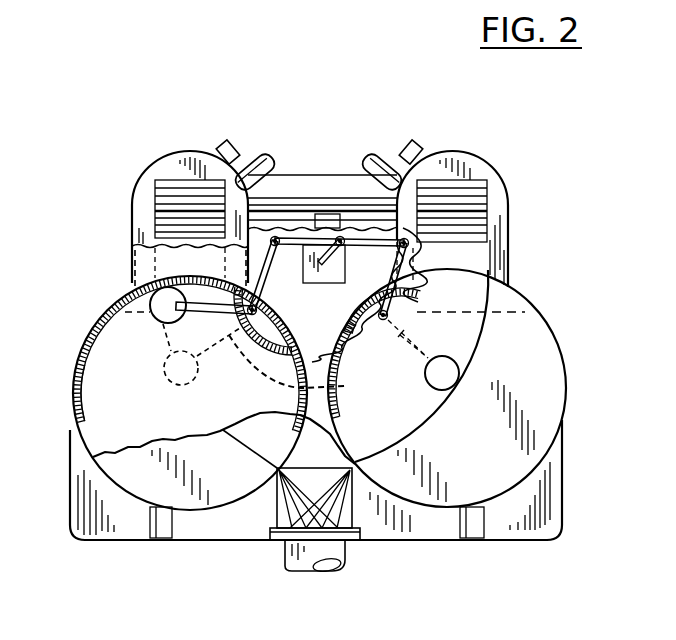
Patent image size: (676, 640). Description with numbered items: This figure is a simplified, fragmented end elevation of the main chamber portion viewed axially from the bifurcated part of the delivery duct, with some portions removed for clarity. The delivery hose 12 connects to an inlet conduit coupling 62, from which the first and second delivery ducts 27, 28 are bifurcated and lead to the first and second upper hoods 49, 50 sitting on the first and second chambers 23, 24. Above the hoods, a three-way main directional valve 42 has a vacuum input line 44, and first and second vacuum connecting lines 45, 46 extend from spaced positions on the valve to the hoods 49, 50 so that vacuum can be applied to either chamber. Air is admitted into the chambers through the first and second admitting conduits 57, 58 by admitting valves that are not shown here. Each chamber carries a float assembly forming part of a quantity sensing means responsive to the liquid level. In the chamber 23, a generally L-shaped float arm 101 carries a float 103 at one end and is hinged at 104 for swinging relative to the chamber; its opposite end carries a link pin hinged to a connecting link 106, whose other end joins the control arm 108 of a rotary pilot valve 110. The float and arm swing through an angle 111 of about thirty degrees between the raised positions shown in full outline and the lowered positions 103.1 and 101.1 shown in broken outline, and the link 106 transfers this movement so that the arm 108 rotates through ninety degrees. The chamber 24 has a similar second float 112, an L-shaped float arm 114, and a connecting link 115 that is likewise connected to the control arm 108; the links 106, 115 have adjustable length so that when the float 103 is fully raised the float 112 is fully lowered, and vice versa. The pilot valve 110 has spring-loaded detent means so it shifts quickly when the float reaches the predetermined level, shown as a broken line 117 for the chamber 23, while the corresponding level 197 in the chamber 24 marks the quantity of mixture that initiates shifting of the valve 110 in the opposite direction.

The delivery hose 12 is at (347, 555).
The first chamber 23 is at (78, 352).
The second chamber 24 is at (553, 365).
The first delivery duct 27 is at (257, 441).
The second delivery duct 28 is at (427, 423).
The main directional valve 42 is at (312, 180).
The vacuum input line 44 is at (330, 222).
The first vacuum connecting line 45 is at (261, 158).
The second vacuum connecting line 46 is at (377, 160).
The first upper hood 49 is at (162, 168).
The second upper hood 50 is at (473, 172).
The first admitting conduit 57 is at (232, 140).
The second admitting conduit 58 is at (422, 142).
The inlet conduit coupling 62 is at (275, 500).
The float arm 101 is at (214, 306).
The lowered position of float arm 101.1 is at (205, 352).
The float 103 is at (157, 333).
The lowered position of float 103.1 is at (165, 387).
The hinge 104 is at (262, 337).
The connecting link 106 is at (288, 244).
The control arm 108 is at (325, 262).
The rotary pilot valve 110 is at (321, 284).
The angle of float swing 111 is at (141, 353).
The second float 112 is at (455, 356).
The second float arm 114 is at (410, 371).
The second connecting link 115 is at (358, 246).
The predetermined level 117 is at (124, 310).
The level 197 is at (497, 312).